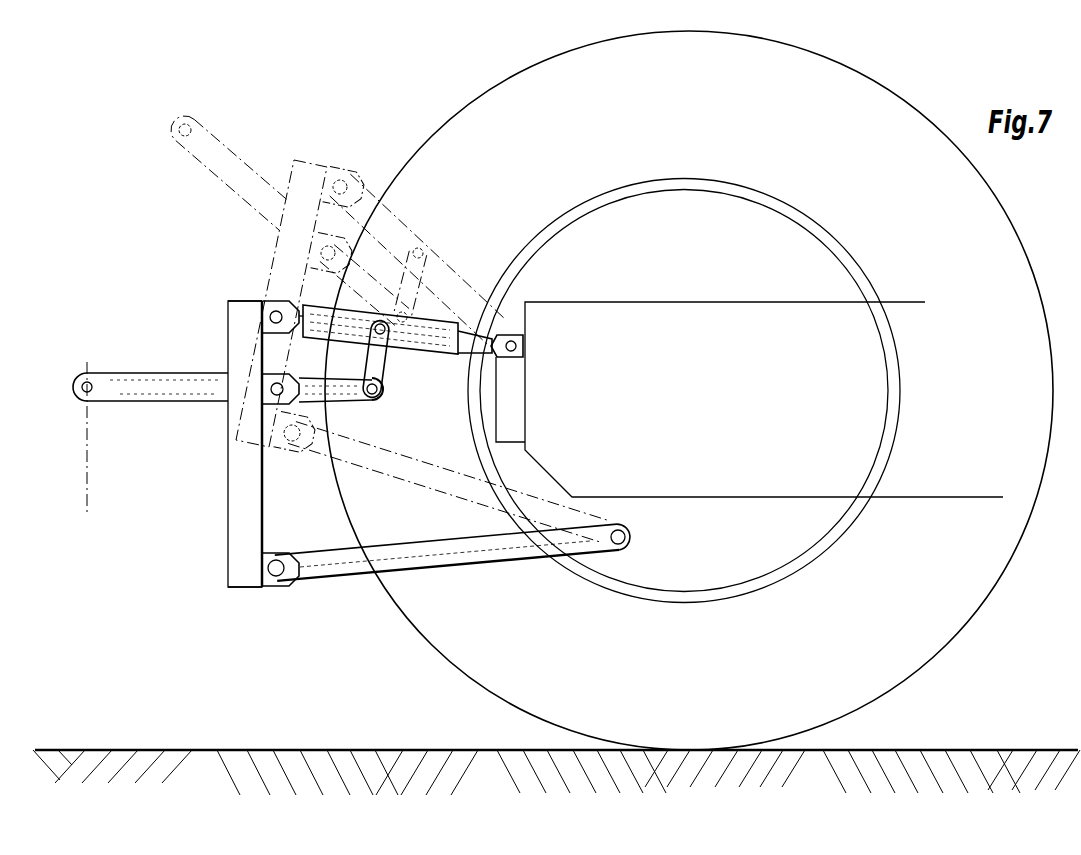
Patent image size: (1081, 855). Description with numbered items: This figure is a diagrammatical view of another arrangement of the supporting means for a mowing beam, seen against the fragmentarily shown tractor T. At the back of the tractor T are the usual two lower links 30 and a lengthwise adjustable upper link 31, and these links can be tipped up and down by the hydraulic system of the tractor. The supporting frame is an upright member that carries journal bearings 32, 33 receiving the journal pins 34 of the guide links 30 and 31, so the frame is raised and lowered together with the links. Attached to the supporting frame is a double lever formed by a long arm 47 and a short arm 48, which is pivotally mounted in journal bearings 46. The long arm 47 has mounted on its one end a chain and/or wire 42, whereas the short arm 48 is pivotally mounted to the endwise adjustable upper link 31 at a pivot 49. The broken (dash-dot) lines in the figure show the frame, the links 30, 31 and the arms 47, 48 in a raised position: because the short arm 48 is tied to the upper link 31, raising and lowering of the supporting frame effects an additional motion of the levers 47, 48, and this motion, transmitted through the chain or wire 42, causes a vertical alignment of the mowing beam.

The lower links 30 is at (324, 570).
The upper link 31 is at (336, 322).
The journal bearing 32 is at (272, 586).
The journal bearing 33 is at (270, 298).
The journal pins 34 is at (272, 316).
The chain and/or wire 42 is at (87, 498).
The journal bearings 46 is at (351, 387).
The long arm 47 is at (165, 390).
The short arm 48 is at (392, 395).
The pivot pin 49 is at (380, 365).
The tractor T is at (709, 322).